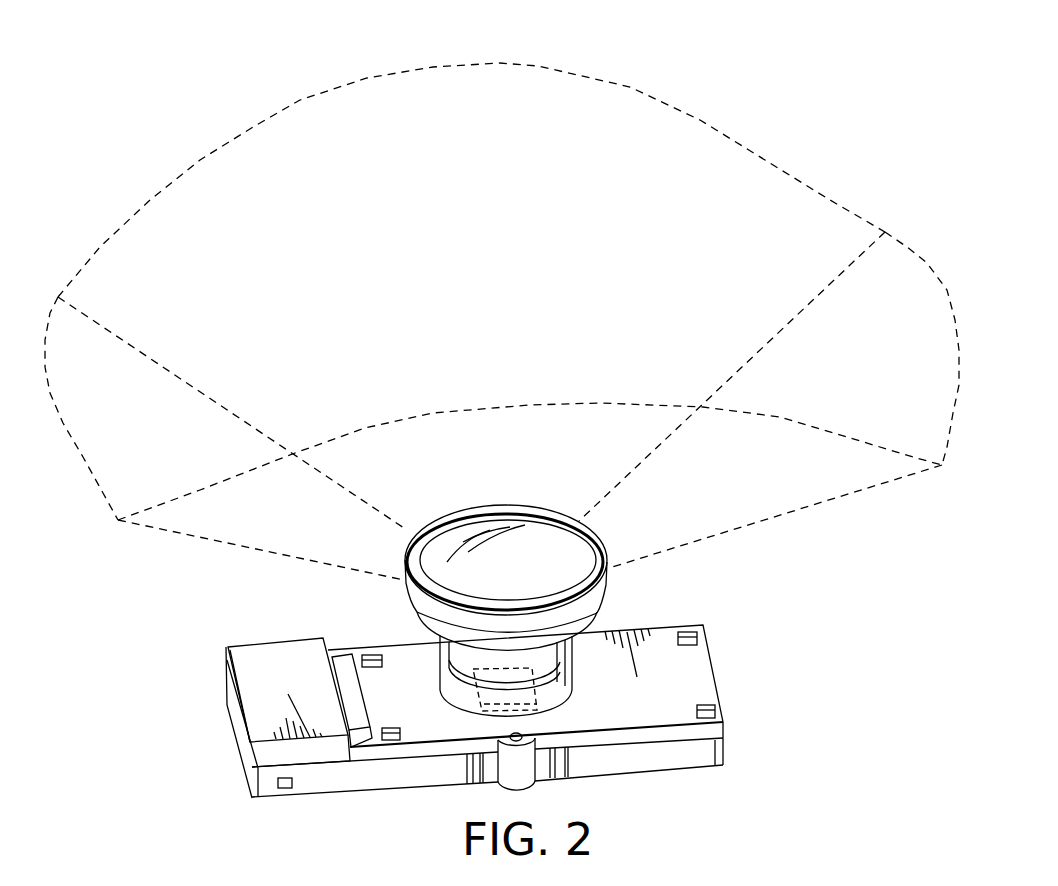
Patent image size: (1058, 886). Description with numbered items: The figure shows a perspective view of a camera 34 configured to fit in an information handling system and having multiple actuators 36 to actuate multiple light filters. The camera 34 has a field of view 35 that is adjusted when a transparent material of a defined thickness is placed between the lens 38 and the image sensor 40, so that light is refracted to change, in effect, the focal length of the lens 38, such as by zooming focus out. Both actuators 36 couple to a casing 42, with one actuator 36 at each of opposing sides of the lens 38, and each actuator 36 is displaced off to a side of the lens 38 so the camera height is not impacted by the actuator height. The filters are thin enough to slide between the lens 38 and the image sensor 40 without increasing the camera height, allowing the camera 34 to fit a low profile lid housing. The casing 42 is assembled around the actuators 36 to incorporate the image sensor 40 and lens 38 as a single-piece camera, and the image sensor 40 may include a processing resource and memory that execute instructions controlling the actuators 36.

The camera 34 is at (795, 744).
The field of view 35 is at (375, 80).
The actuators 36 is at (270, 652).
The lens 38 is at (605, 576).
The image sensor 40 is at (540, 693).
The casing 42 is at (713, 672).